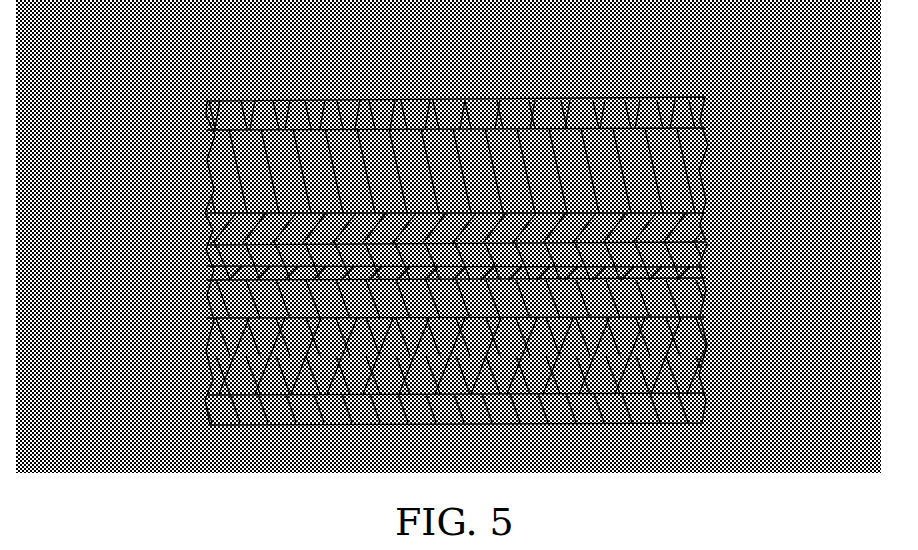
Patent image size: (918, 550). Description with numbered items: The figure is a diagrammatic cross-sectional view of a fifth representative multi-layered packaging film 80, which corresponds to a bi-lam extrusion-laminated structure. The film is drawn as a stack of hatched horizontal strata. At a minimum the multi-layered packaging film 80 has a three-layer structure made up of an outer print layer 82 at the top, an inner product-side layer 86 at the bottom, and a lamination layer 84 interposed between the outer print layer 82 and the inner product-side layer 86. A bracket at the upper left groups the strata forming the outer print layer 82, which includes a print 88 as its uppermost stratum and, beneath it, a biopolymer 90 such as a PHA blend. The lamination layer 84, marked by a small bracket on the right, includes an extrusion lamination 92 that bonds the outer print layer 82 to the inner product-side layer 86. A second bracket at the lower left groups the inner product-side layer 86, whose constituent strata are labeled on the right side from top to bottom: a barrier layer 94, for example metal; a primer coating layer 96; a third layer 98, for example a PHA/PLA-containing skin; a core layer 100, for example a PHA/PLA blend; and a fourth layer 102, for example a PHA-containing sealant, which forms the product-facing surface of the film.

The multi-layered packaging film 80 is at (162, 65).
The outer print layer 82 is at (175, 100).
The lamination layer 84 is at (730, 210).
The inner product-side layer 86 is at (183, 252).
The print 88 is at (703, 107).
The biopolymer 90 is at (705, 167).
The extrusion lamination 92 is at (233, 233).
The barrier layer 94 is at (705, 255).
The primer coating layer 96 is at (705, 268).
The third layer 98 is at (705, 302).
The core layer 100 is at (705, 353).
The fourth layer 102 is at (705, 403).